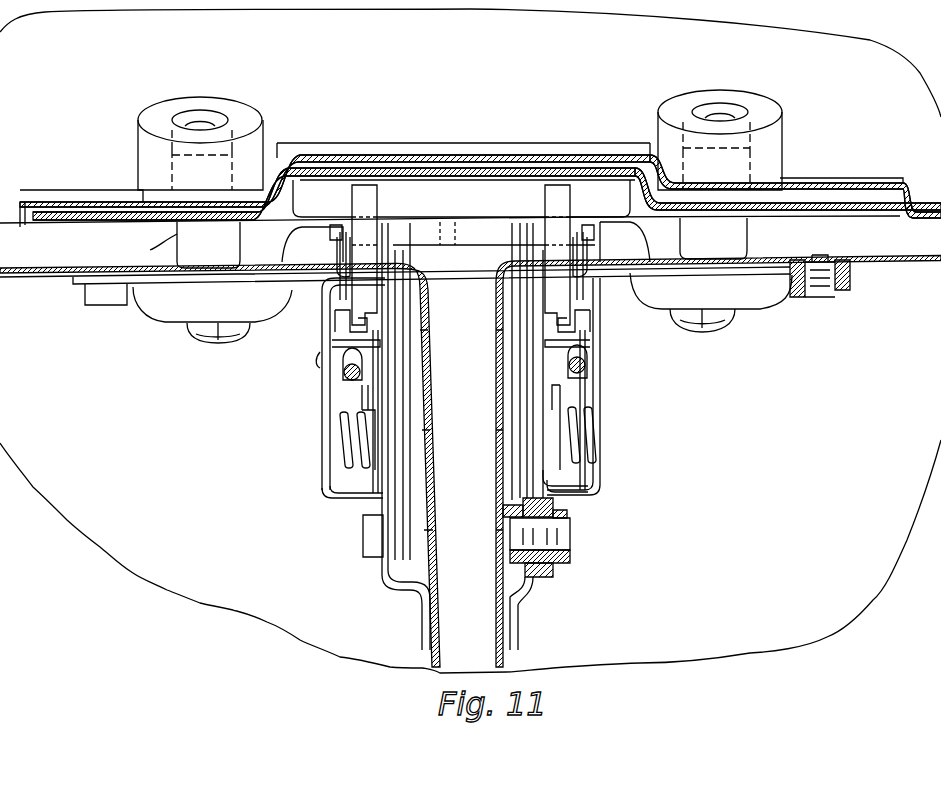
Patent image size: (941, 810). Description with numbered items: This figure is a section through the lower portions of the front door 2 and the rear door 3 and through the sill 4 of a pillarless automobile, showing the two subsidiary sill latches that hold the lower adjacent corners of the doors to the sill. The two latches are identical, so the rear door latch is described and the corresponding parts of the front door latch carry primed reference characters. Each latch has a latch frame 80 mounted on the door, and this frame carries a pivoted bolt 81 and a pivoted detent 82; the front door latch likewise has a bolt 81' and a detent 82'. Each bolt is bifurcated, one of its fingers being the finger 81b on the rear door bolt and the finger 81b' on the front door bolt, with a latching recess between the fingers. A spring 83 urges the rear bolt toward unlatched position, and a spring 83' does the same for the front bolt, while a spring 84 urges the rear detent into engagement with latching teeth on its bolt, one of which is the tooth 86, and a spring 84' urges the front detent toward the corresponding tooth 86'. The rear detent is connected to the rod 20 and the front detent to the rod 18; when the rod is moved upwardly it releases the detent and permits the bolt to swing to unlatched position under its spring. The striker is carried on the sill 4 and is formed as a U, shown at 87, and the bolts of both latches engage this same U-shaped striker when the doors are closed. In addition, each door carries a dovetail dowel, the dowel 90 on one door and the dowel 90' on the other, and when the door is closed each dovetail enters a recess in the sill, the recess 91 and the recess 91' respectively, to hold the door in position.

The front door 2 is at (888, 543).
The rear door 3 is at (190, 575).
The sill 4 is at (90, 190).
The rod 18 is at (572, 364).
The rod 20 is at (352, 366).
The latch frame 80 is at (328, 392).
The bolt 81 is at (411, 436).
The bolt 81' is at (510, 436).
The finger 81b is at (393, 255).
The finger 81b' is at (531, 255).
The detent 82 is at (323, 360).
The detent 82' is at (595, 359).
The spring 83 is at (318, 262).
The spring 83' is at (588, 244).
The spring 84 is at (326, 440).
The spring 84' is at (602, 435).
The latching tooth 86 is at (329, 324).
The latching tooth 86' is at (597, 320).
The striker 87 is at (452, 232).
The dovetail dowel 90 is at (208, 282).
The dovetail dowel 90' is at (720, 275).
The recess 91 is at (201, 133).
The recess 91' is at (721, 133).